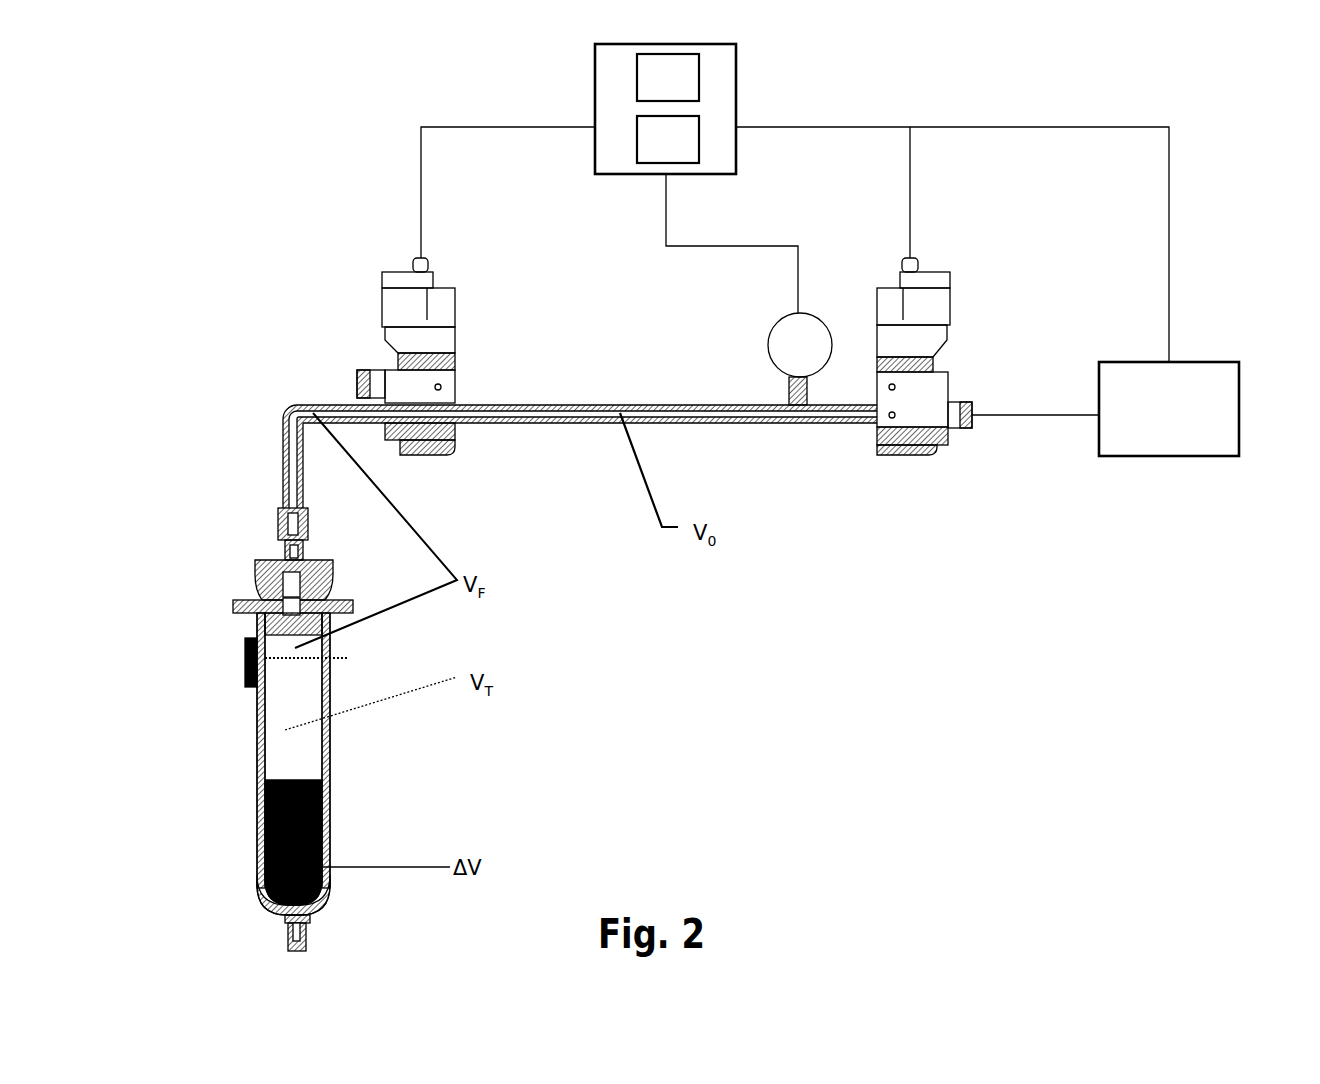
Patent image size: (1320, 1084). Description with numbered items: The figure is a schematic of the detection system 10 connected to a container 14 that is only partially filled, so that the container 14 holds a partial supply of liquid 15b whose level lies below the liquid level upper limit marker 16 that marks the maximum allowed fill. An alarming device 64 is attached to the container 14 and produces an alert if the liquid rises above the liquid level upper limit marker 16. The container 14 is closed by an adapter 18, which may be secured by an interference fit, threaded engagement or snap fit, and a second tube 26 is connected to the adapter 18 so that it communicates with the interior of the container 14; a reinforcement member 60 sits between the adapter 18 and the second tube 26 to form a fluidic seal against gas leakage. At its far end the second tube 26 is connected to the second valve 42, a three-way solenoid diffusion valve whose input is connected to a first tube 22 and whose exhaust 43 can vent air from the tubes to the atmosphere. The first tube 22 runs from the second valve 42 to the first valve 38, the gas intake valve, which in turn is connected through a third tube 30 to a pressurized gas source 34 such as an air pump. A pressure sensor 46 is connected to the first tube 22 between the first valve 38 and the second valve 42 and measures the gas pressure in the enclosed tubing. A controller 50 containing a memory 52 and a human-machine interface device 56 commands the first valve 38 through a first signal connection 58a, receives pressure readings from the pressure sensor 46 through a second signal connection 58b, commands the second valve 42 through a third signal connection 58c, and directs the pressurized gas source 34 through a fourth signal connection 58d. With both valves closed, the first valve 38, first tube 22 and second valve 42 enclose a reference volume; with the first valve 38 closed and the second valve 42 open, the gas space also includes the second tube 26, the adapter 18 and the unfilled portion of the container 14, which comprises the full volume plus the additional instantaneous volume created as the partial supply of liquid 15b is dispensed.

The detection system 10 is at (242, 278).
The container 14 is at (256, 760).
The partial supply of liquid 15b is at (305, 823).
The liquid level upper limit marker 16 is at (328, 642).
The adapter 18 is at (260, 575).
The first tube 22 is at (560, 405).
The second tube 26 is at (285, 420).
The third tube 30 is at (960, 398).
The pressurized gas source 34 is at (1105, 409).
The first valve 38 is at (905, 285).
The second valve 42 is at (423, 280).
The exhaust 43 is at (340, 380).
The pressure sensor 46 is at (770, 355).
The controller 50 is at (737, 93).
The memory 52 is at (668, 77).
The human-machine interface (HMI) device 56 is at (668, 139).
The first signal connection 58a is at (838, 127).
The second signal connection 58b is at (722, 246).
The third signal connection 58c is at (421, 127).
The fourth signal connection 58d is at (1170, 150).
The reinforcement member 60 is at (280, 510).
The alarming device 64 is at (245, 650).